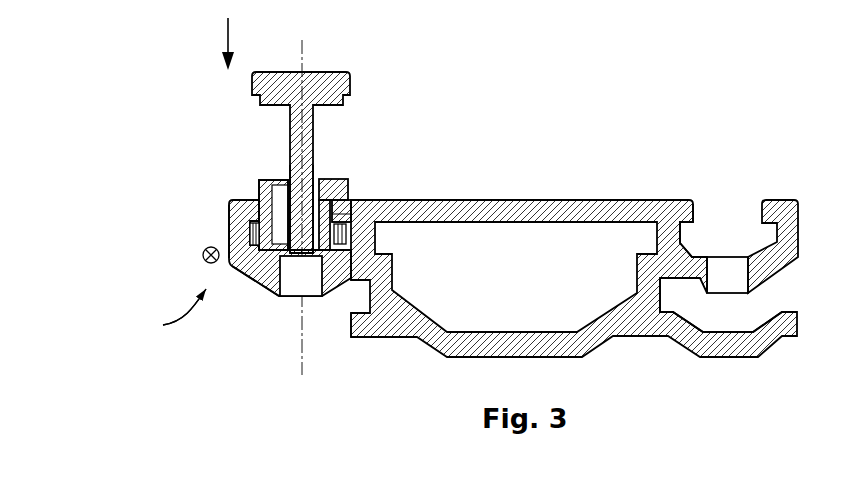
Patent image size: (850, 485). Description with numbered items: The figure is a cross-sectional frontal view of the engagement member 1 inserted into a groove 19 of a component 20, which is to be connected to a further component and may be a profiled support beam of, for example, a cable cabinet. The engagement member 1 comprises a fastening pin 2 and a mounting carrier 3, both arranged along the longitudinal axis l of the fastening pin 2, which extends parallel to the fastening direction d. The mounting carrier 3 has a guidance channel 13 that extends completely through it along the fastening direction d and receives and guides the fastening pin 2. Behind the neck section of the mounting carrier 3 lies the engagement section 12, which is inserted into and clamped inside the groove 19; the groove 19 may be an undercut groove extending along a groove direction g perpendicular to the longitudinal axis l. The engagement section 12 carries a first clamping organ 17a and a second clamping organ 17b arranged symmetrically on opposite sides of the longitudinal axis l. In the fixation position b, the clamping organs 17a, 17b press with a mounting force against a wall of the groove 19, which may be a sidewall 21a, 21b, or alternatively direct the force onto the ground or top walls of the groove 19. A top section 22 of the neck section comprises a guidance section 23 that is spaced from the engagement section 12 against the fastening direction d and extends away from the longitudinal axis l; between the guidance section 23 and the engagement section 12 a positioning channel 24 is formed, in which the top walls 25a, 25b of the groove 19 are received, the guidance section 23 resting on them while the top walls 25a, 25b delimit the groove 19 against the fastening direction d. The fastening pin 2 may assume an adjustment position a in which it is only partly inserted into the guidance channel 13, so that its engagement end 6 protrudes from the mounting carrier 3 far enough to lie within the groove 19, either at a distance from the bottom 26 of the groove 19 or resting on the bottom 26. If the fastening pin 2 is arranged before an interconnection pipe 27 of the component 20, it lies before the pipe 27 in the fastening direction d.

The engagement member 1 is at (142, 72).
The fastening pin 2 is at (361, 101).
The mounting carrier 3 is at (250, 186).
The engagement end 6 is at (280, 257).
The engagement section 12 is at (226, 220).
The guidance channel 13 is at (324, 163).
The clamping organ 17a is at (252, 258).
The second clamping organ 17b is at (336, 217).
The groove 19 is at (350, 186).
The component 20 is at (514, 201).
The sidewall 21a is at (247, 230).
The sidewall 21b is at (358, 233).
The top section 22 is at (256, 175).
The guidance section 23 is at (273, 215).
The positioning channel 24 is at (338, 207).
The top wall 25a is at (686, 199).
The top wall 25b is at (786, 199).
The bottom 26 is at (354, 262).
The interconnection pipe 27 is at (727, 297).
The fastening direction d is at (226, 37).
The groove direction g is at (204, 258).
The longitudinal axis l is at (303, 53).
The adjustment position a is at (166, 313).
The fixation position b is at (184, 307).